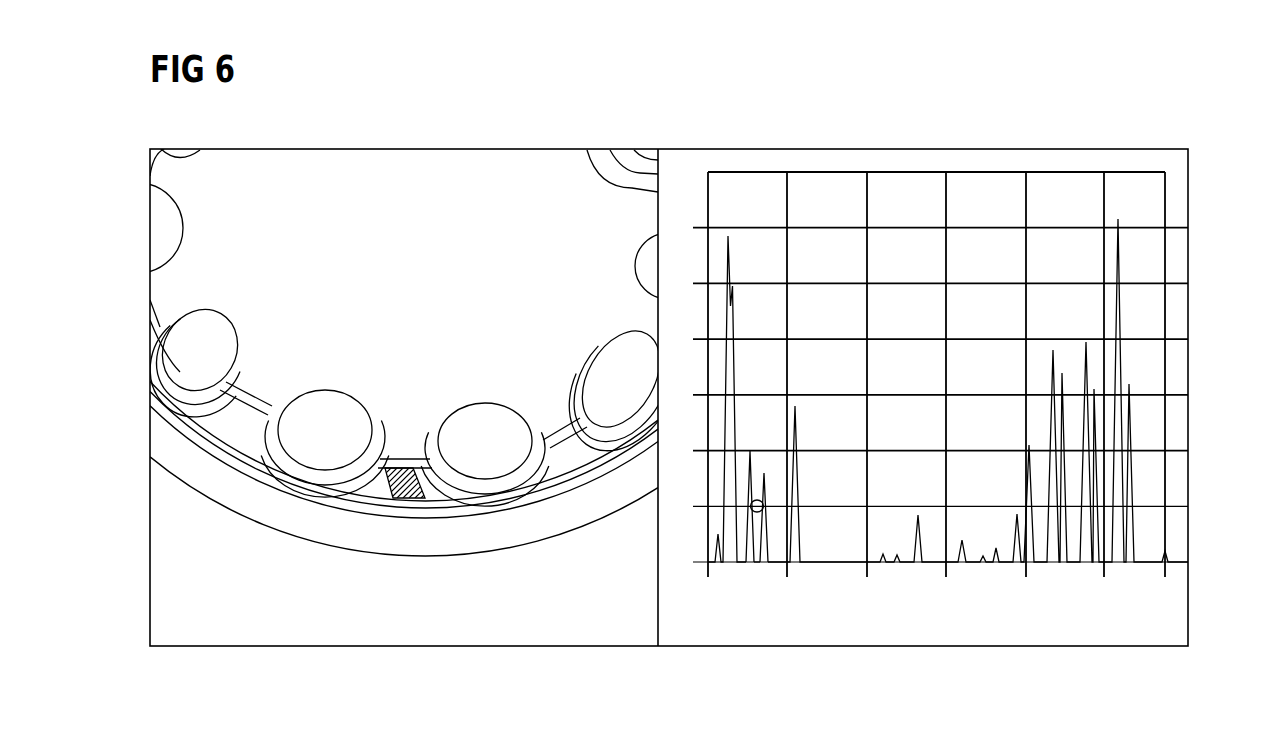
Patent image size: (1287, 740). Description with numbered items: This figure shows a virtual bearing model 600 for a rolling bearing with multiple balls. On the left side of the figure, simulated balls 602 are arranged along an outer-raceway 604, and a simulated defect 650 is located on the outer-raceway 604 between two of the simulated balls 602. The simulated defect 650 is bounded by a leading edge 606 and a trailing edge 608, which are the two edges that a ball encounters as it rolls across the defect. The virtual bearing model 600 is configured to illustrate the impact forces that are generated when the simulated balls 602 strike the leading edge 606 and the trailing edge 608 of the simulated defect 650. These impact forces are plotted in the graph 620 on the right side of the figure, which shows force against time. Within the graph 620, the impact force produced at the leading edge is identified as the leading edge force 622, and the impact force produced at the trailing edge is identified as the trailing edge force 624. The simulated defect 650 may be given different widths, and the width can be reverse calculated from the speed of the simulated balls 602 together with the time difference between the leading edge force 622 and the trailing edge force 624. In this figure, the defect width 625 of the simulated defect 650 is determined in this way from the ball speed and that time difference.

The virtual bearing model 600 is at (1202, 127).
The simulated balls 602 is at (177, 357).
The outer-raceway 604 is at (579, 452).
The leading edge 606 is at (386, 490).
The trailing edge 608 is at (412, 495).
The simulated defect 650 is at (402, 482).
The graph 620 is at (906, 172).
The leading edge force 622 is at (749, 566).
The trailing edge force 624 is at (757, 566).
The defect width 625 is at (757, 499).